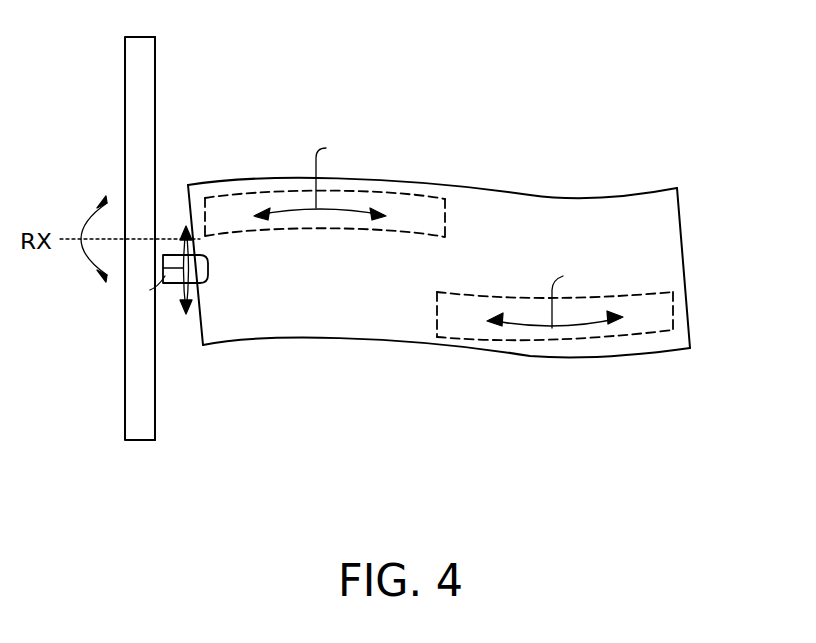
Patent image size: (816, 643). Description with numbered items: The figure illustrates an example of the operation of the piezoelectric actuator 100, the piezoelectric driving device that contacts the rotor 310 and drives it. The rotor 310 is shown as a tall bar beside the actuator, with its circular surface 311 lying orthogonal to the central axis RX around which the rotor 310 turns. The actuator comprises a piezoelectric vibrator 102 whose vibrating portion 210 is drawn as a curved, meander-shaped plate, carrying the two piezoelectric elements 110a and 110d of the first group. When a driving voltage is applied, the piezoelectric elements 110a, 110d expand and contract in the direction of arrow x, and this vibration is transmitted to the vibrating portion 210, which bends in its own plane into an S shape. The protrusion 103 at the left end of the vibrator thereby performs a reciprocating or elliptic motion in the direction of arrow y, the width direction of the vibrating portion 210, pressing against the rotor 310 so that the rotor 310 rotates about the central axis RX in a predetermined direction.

The rotor 310 is at (140, 36).
The circular surface 311 is at (155, 63).
The protrusion 103 is at (198, 278).
The piezoelectric actuator 100 is at (486, 240).
The piezoelectric vibrator 102 is at (486, 240).
The vibrating portion 210 is at (590, 197).
The piezoelectric element 110a is at (355, 192).
The piezoelectric element 110d is at (538, 340).